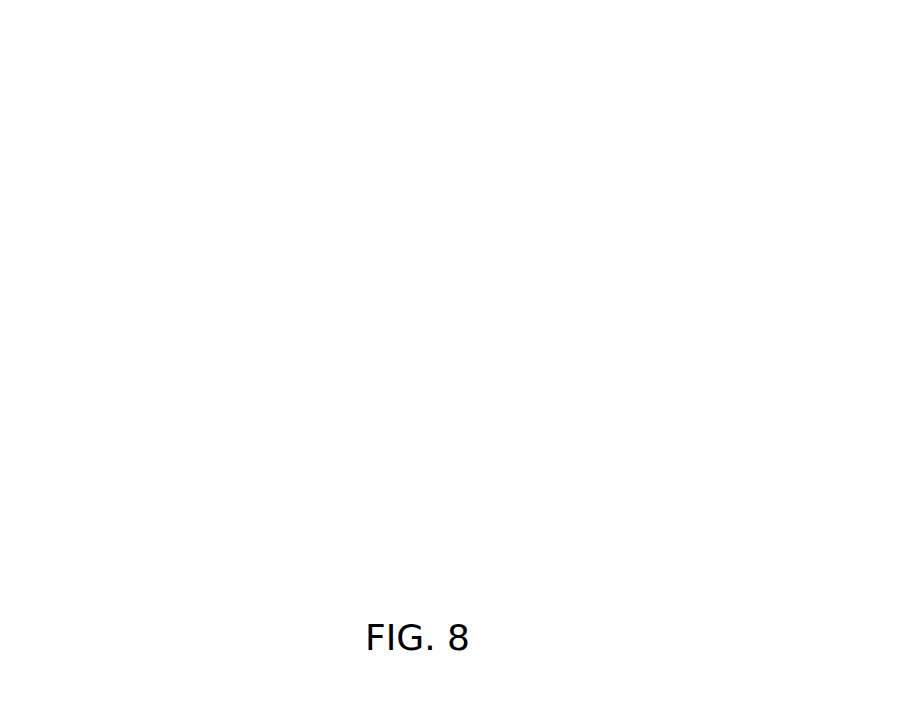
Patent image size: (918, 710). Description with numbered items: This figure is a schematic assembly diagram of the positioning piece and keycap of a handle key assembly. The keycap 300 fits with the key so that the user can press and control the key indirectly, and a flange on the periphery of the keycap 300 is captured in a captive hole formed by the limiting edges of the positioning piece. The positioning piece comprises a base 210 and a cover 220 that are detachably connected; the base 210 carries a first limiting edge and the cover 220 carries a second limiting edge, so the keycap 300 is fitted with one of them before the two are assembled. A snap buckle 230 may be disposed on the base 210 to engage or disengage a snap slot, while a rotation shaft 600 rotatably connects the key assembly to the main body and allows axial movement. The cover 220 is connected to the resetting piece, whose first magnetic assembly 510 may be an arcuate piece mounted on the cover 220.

The keycap 300 is at (367, 163).
The rotation shaft 600 is at (463, 266).
The cover 220 is at (571, 303).
The base 210 is at (605, 425).
The snap buckle 230 is at (577, 495).
The first magnetic assembly 510 is at (484, 384).